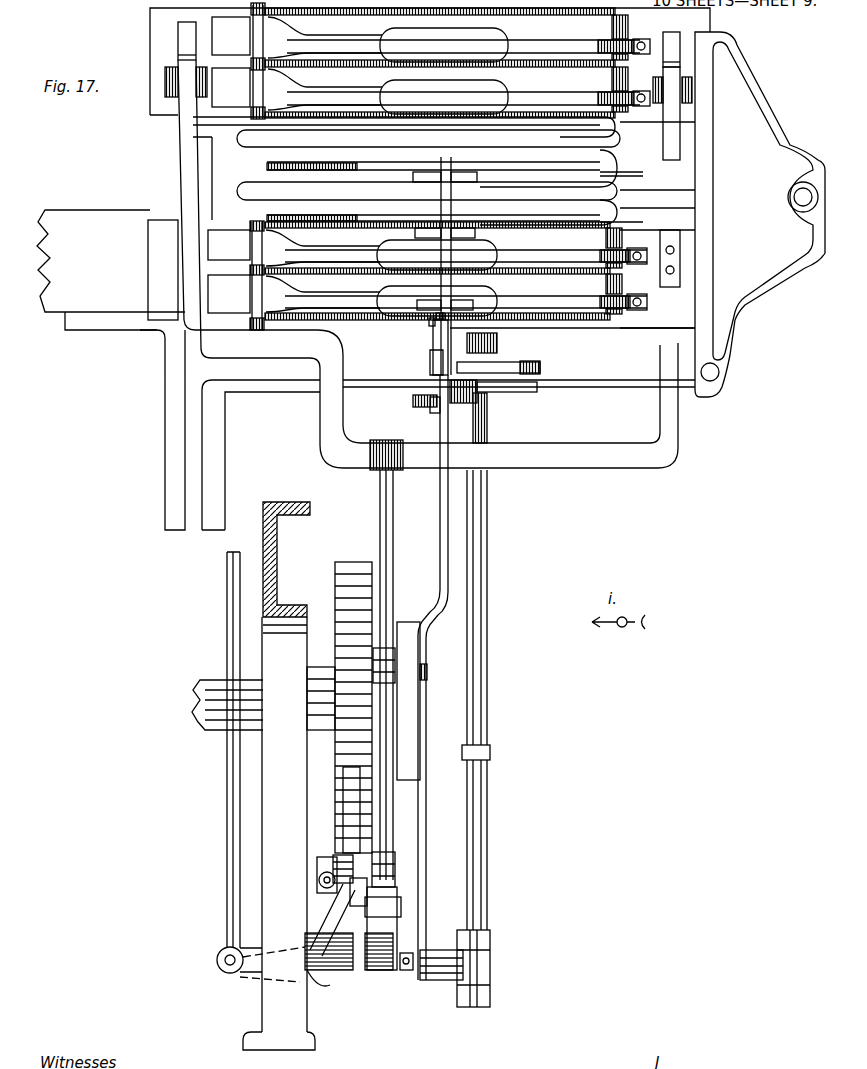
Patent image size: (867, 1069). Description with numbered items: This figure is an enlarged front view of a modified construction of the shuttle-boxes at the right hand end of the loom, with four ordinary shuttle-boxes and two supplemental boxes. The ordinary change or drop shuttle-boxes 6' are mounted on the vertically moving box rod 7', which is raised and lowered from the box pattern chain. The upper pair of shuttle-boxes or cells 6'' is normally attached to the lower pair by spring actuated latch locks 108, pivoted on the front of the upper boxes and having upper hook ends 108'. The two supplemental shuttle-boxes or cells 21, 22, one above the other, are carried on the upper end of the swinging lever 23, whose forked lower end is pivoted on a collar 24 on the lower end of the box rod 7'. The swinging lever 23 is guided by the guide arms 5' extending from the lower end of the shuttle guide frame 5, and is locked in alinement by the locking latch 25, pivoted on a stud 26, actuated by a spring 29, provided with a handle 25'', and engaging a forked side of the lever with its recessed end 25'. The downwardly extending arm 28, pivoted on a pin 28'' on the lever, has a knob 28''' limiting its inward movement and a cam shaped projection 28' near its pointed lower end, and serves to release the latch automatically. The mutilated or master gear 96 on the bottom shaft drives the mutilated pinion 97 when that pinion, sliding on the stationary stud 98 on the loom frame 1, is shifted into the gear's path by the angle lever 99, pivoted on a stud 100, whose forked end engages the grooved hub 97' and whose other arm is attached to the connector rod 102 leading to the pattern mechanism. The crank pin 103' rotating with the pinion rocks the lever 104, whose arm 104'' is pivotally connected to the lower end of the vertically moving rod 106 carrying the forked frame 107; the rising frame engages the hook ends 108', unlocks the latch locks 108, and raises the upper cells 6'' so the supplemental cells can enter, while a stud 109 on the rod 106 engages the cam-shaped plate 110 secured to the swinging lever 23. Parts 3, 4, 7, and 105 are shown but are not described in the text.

The loom end frame 1 is at (272, 552).
The bar 3 is at (88, 232).
The bracket 4 is at (192, 482).
The shuttle guide frame 5 is at (760, 214).
The guide arms 5' is at (411, 409).
The ordinary change or drop shuttle-boxes 6' is at (456, 269).
The upper shuttle-boxes or cells 6'' is at (457, 63).
The rod 7 is at (487, 837).
The box rod 7' is at (492, 607).
The supplemental shuttle-box or cell 21 is at (428, 150).
The supplemental shuttle-box or cell 22 is at (427, 202).
The swinging lever 23 is at (447, 488).
The collar 24 is at (472, 973).
The locking latch 25 is at (503, 408).
The recessed end 25' is at (492, 418).
The handle 25'' is at (516, 400).
The stud 26 is at (472, 362).
The downwardly extending arm 28 is at (429, 266).
The cam shaped projection 28' is at (417, 365).
The pin or stud 28'' is at (388, 329).
The knob or projection 28''' is at (396, 335).
The spring 29 is at (512, 367).
The mutilated or master gear 96 is at (350, 600).
The mutilated pinion 97 is at (311, 920).
The hub 97' is at (327, 853).
The stationary stud 98 is at (318, 881).
The angle lever 99 is at (322, 918).
The stud 100 is at (323, 982).
The connector or rod 102 is at (233, 800).
The crank pin 103' is at (409, 904).
The lever 104 is at (410, 928).
The arm of the lever 104'' is at (405, 882).
The stud 105 is at (396, 972).
The vertically moving rod 106 is at (388, 552).
The forked frame 107 is at (181, 178).
The spring actuated latch locks 108 is at (703, 113).
The upper hook ends 108' is at (435, 58).
The stud 109 is at (427, 672).
The cam-shaped arm or plate 110 is at (410, 648).